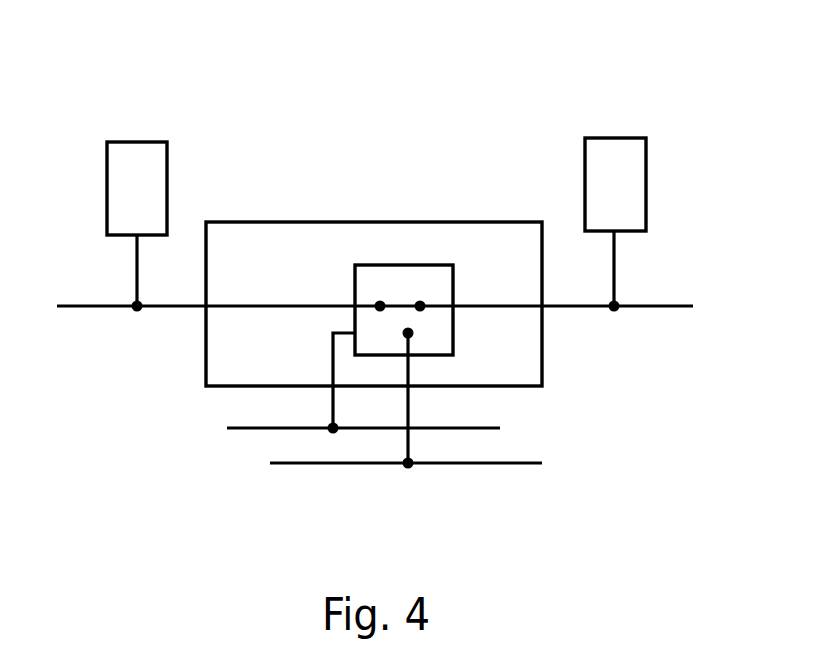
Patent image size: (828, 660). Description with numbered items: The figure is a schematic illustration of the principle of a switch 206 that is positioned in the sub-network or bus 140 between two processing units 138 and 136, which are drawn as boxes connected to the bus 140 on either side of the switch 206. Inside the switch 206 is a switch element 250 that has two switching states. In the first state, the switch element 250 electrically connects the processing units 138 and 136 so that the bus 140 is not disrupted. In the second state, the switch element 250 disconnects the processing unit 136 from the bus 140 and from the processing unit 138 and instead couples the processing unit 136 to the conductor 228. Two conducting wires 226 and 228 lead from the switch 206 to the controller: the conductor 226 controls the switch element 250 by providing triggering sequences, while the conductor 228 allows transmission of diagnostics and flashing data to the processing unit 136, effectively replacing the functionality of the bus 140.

The processing unit 136 is at (600, 137).
The processing unit 138 is at (122, 141).
The sub-network or bus 140 is at (167, 310).
The switch 206 is at (382, 222).
The conductor 226 is at (496, 425).
The conductor 228 is at (455, 466).
The switch element 250 is at (432, 265).